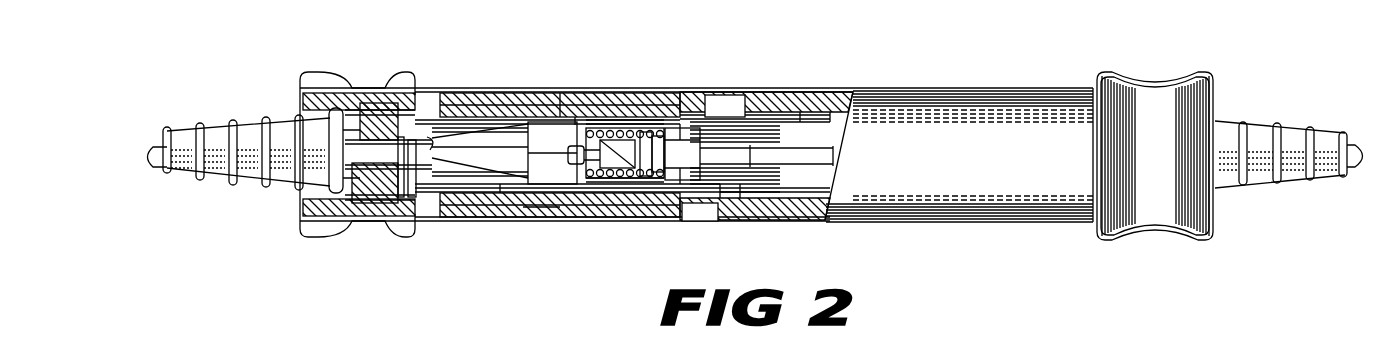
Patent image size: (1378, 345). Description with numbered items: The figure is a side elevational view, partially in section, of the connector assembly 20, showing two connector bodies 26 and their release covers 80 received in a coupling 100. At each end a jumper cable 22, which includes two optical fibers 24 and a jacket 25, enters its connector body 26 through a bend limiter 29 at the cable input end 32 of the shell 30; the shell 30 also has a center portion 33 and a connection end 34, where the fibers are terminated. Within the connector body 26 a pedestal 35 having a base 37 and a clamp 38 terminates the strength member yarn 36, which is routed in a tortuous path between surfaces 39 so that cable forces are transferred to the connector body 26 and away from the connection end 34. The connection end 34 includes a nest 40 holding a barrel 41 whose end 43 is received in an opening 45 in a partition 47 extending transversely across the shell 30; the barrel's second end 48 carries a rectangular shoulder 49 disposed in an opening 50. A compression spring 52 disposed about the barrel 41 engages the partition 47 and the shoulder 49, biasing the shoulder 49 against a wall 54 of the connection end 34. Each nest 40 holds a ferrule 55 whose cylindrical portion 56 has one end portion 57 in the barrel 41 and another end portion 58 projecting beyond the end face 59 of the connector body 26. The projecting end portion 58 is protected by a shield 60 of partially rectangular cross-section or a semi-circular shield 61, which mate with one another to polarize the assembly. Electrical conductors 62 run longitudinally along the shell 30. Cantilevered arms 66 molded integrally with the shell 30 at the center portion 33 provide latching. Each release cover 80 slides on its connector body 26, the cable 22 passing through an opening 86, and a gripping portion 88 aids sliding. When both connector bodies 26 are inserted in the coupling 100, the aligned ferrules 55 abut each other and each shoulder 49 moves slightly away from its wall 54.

The connector assembly 20 is at (796, 38).
The jumper cable 22 is at (151, 135).
The optical fiber 24 is at (556, 160).
The jacket 25 is at (150, 165).
The connector body 26 is at (672, 140).
The bend limiter 29 is at (193, 125).
The shell 30 is at (573, 117).
The cable input end 32 is at (343, 205).
The center portion 33 is at (560, 225).
The connection end 34 is at (718, 228).
The pedestal 35 is at (368, 190).
The strength member yarn 36 is at (428, 140).
The base 37 is at (450, 150).
The clamp 38 is at (427, 190).
The surfaces 39 is at (393, 188).
The nest 40 is at (630, 205).
The barrel 41 is at (617, 147).
The end 43 is at (567, 180).
The opening 45 is at (562, 147).
The partition 47 is at (553, 117).
The second end 48 is at (640, 175).
The rectangular shoulder 49 is at (628, 175).
The opening 50 is at (705, 143).
The compression spring 52 is at (595, 128).
The wall 54 is at (684, 137).
The ferrule 55 is at (722, 195).
The cylindrical portion 56 is at (735, 150).
The end portion 57 is at (597, 210).
The end portion 58 is at (770, 125).
The end face 59 is at (700, 212).
The shield 60 is at (820, 117).
The shield 61 is at (725, 105).
The electrical conductors 62 is at (507, 175).
The cantilevered arm 66 is at (523, 213).
The release cover 80 is at (512, 85).
The opening 86 is at (304, 110).
The gripping portion 88 is at (315, 83).
The coupling 100 is at (923, 85).